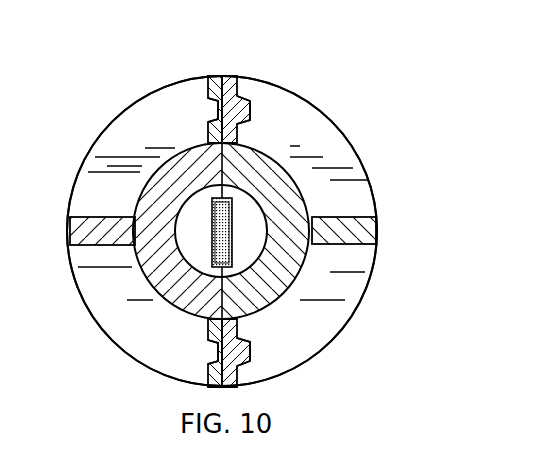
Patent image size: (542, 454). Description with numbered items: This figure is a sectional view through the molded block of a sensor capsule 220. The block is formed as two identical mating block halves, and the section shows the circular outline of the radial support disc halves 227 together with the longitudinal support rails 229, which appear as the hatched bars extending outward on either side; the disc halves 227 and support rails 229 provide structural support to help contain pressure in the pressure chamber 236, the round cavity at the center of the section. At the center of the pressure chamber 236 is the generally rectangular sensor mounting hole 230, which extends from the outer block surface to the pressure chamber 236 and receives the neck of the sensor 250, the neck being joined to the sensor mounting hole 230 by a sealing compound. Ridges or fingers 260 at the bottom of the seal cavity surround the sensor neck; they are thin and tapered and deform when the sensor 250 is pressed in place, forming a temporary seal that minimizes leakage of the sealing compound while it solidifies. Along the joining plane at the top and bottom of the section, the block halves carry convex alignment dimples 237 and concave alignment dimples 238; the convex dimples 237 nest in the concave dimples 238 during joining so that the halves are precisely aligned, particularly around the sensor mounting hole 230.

The sensor capsule 220 is at (110, 55).
The radial support disc halves 227 is at (133, 127).
The longitudinal support rails 229 is at (90, 233).
The sensor mounting hole 230 is at (233, 212).
The pressure chamber 236 is at (198, 233).
The convex alignment dimples 237 is at (247, 100).
The concave alignment dimples 238 is at (218, 110).
The sensor 250 is at (234, 250).
The ridges or fingers 260 is at (212, 222).